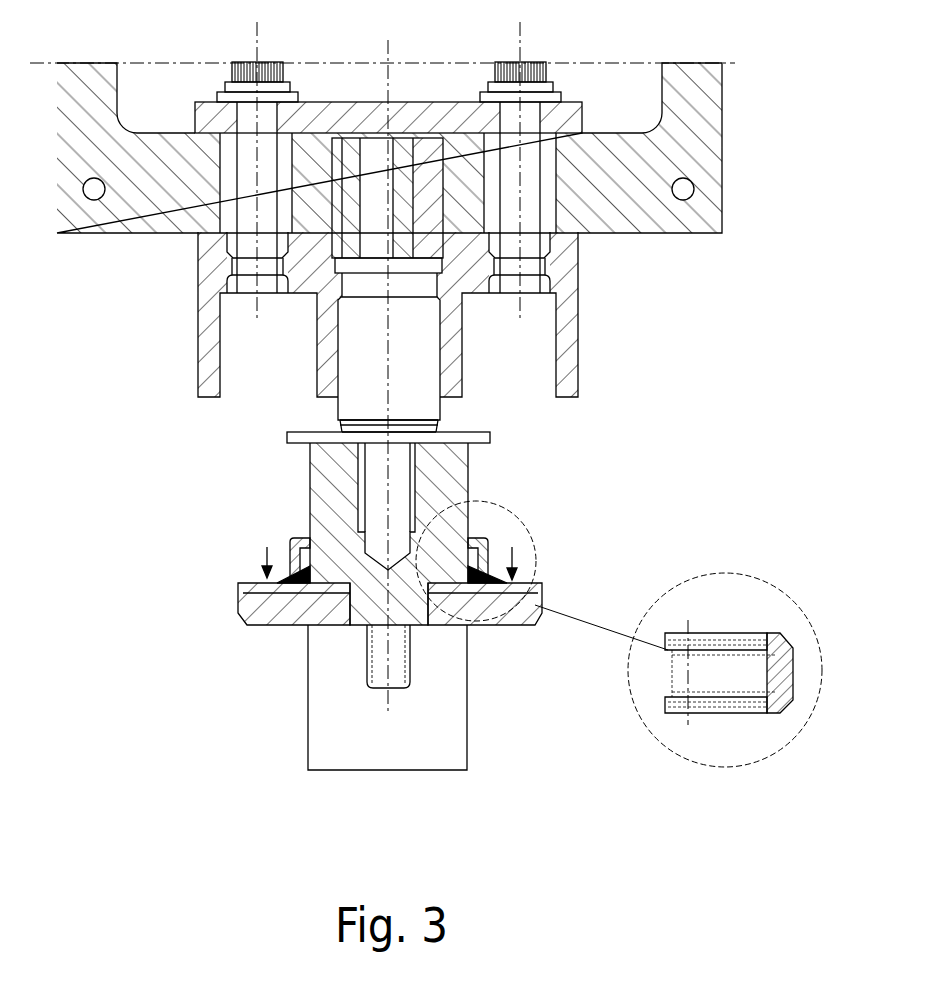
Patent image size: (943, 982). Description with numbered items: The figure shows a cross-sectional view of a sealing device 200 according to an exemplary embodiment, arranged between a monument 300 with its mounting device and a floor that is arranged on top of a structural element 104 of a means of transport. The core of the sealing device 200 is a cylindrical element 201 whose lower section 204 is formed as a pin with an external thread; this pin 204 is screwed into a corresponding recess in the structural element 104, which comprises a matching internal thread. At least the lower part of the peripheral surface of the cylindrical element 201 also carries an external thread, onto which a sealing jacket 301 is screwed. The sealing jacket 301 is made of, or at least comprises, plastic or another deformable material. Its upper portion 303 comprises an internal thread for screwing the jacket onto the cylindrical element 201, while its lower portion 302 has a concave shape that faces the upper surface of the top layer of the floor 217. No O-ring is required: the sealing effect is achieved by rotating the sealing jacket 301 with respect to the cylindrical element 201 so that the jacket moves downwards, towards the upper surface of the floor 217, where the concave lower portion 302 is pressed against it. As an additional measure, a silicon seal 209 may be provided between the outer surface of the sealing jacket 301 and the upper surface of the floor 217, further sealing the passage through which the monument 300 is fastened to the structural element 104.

The monument 300 is at (737, 141).
The sealing device 200 is at (214, 515).
The cylindrical element 201 is at (310, 464).
The top layer of the floor 217 is at (238, 590).
The sealing jacket 301 is at (287, 552).
The silicon seal 209 is at (500, 575).
The upper portion of the sealing jacket 303 is at (752, 632).
The lower portion of the sealing jacket 302 is at (783, 713).
The lower section of the cylindrical element 204 is at (397, 660).
The structural element 104 is at (453, 760).